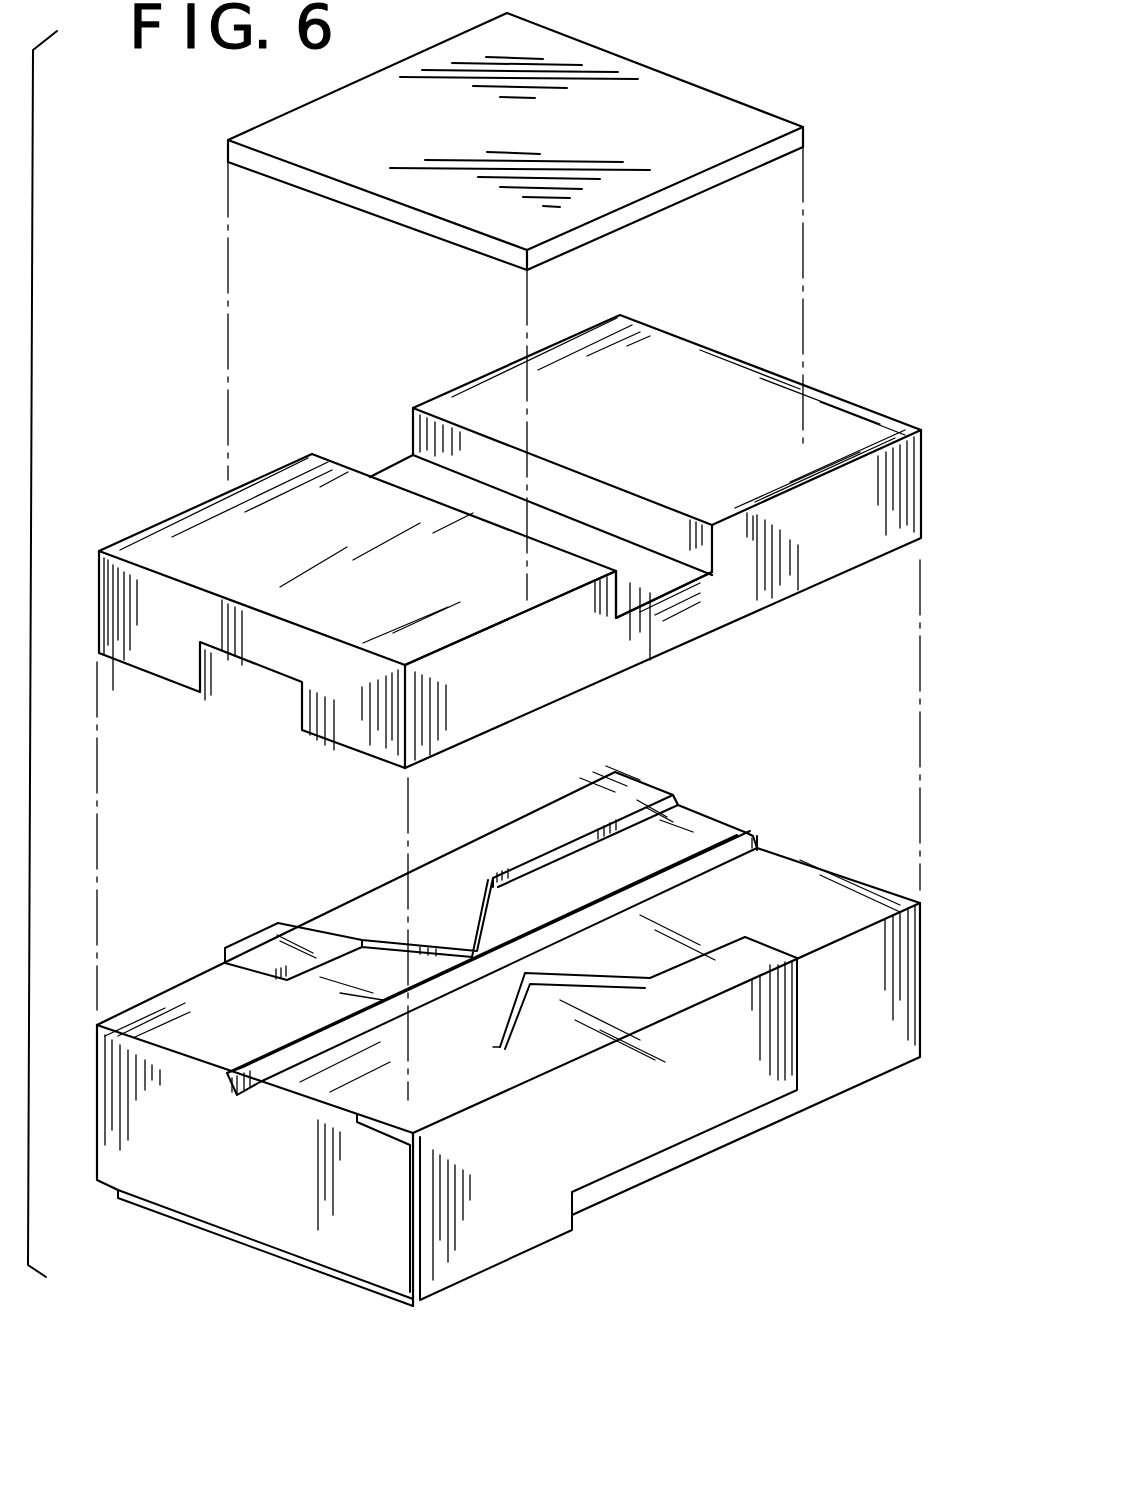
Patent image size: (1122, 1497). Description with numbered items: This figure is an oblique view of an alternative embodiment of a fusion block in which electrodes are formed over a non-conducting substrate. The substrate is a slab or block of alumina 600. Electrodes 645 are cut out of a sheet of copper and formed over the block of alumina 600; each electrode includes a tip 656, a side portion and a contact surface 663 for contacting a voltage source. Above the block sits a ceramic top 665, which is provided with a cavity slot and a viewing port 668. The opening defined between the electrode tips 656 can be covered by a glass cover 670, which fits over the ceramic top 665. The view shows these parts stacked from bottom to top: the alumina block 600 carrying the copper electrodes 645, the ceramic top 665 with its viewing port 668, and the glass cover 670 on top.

The block of alumina 600 is at (187, 1163).
The electrodes 645 is at (653, 787).
The tip 656 is at (470, 933).
The contact surface 663 is at (322, 1268).
The ceramic top 665 is at (818, 413).
The viewing port 668 is at (543, 522).
The glass cover 670 is at (693, 115).